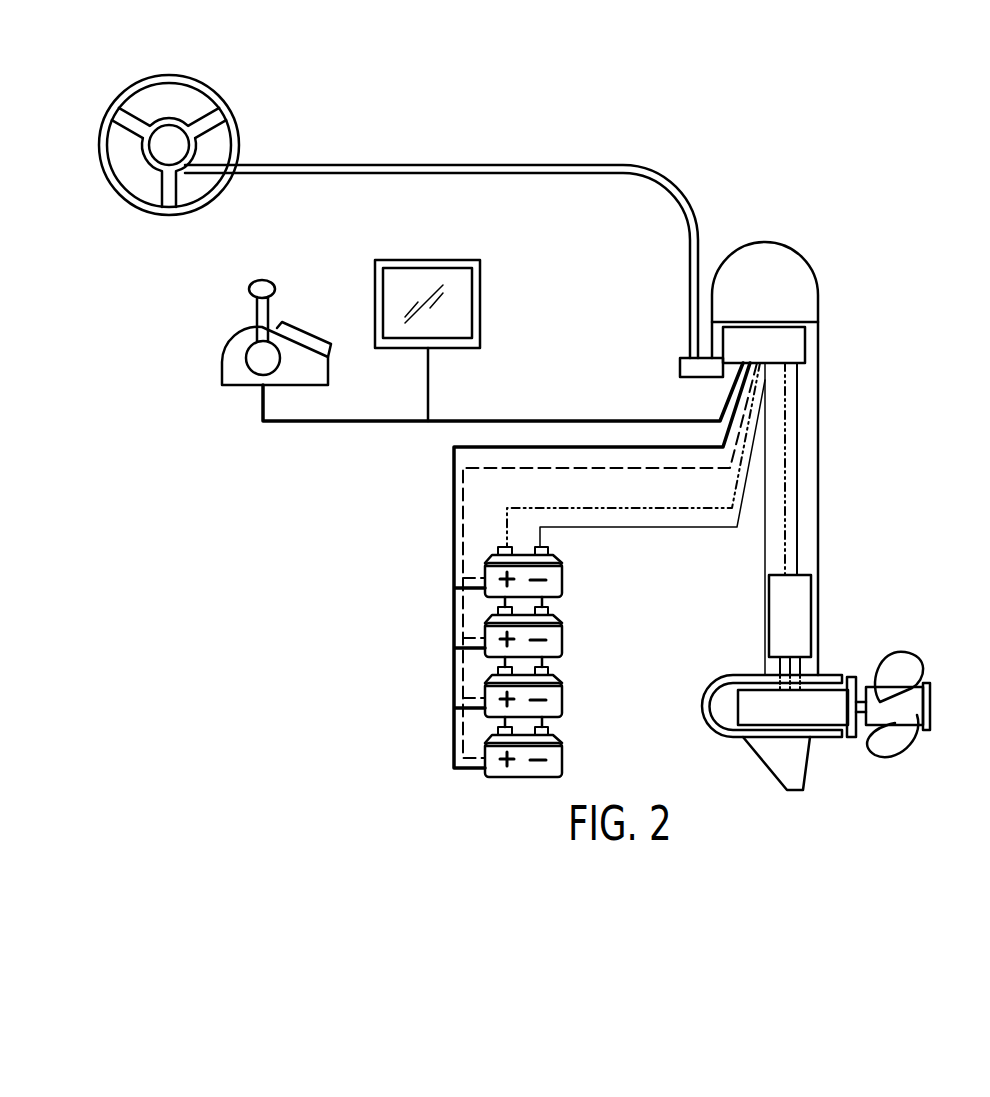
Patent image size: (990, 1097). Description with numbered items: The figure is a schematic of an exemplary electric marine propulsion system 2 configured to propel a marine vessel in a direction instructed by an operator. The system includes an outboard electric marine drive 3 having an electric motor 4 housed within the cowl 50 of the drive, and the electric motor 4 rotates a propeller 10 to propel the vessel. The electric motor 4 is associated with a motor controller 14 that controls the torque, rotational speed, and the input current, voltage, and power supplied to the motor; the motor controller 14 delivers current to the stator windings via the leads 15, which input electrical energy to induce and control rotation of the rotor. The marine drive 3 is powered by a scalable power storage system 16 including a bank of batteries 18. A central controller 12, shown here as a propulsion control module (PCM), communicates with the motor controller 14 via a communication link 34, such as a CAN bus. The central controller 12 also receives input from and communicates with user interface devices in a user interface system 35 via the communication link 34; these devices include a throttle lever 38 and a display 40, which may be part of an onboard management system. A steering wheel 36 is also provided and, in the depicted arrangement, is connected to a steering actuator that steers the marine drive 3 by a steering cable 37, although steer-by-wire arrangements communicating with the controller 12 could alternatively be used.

The electric marine propulsion system 2 is at (748, 117).
The electric marine drive 3 is at (805, 252).
The electric motor 4 is at (785, 727).
The propeller 10 is at (905, 745).
The central controller 12 is at (806, 347).
The motor controller 14 is at (811, 598).
The leads 15 is at (773, 665).
The power storage system 16 is at (510, 662).
The batteries 18 is at (562, 567).
The communication link 34 is at (540, 421).
The user interface system 35 is at (496, 100).
The steering wheel 36 is at (203, 82).
The steering cable 37 is at (412, 164).
The throttle lever 38 is at (264, 280).
The display 40 is at (432, 260).
The cowl 50 is at (766, 242).